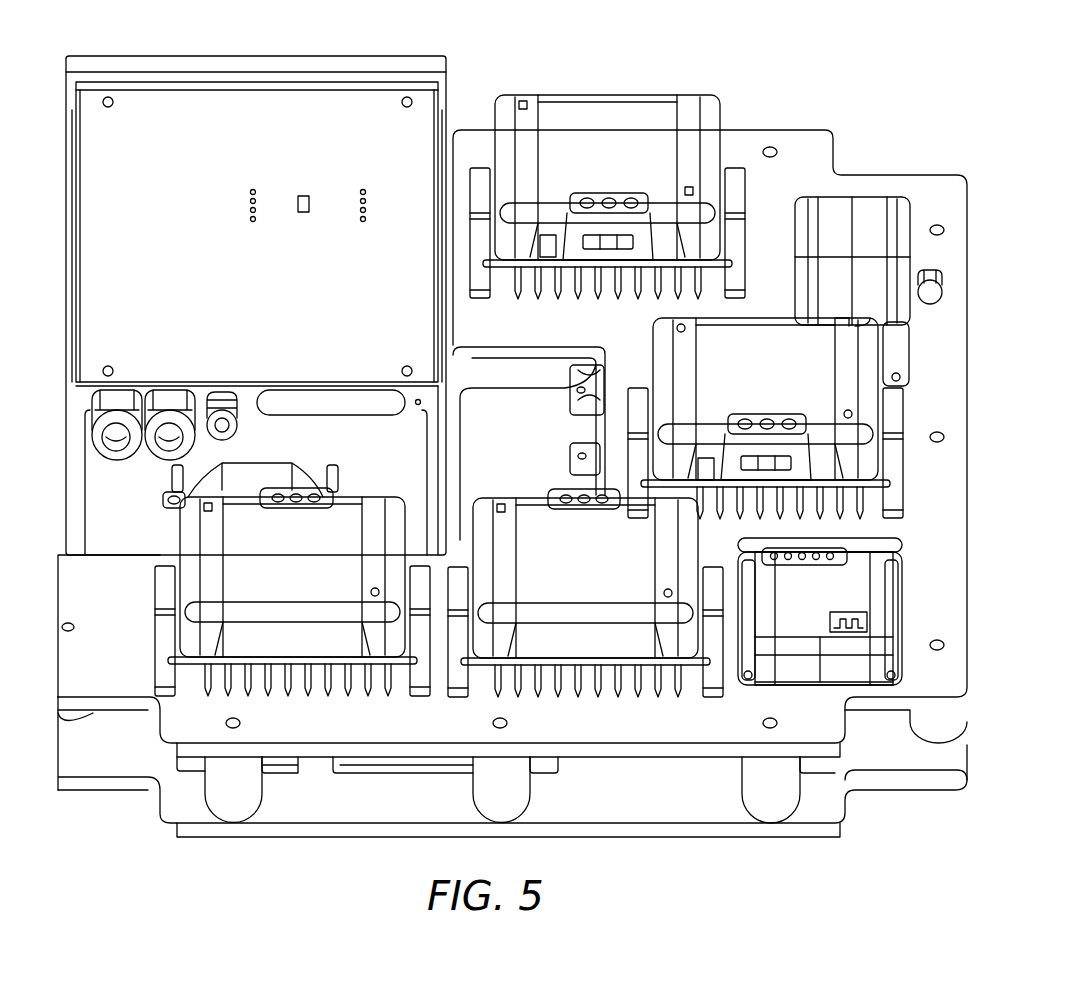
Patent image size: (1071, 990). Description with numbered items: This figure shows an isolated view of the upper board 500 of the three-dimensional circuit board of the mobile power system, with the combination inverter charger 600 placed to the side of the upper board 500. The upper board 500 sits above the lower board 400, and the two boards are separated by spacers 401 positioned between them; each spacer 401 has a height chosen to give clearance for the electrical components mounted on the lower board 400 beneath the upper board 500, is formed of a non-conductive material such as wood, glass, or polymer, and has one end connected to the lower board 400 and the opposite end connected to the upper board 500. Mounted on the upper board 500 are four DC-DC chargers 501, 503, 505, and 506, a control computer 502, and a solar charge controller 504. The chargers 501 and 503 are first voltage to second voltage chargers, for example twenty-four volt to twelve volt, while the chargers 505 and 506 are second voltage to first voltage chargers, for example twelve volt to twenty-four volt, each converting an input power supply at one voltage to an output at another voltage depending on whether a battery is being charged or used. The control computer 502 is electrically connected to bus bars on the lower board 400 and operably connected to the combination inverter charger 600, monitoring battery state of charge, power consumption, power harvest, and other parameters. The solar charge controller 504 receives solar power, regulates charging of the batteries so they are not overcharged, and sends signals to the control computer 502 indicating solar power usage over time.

The lower board 400 is at (588, 823).
The spacers 401 is at (260, 795).
The upper board 500 is at (636, 721).
The charger 501 is at (608, 127).
The control computer 502 is at (865, 207).
The charger 503 is at (781, 386).
The solar charge controller 504 is at (837, 606).
The charger 505 is at (609, 566).
The charger 506 is at (314, 569).
The combination inverter charger 600 is at (148, 105).